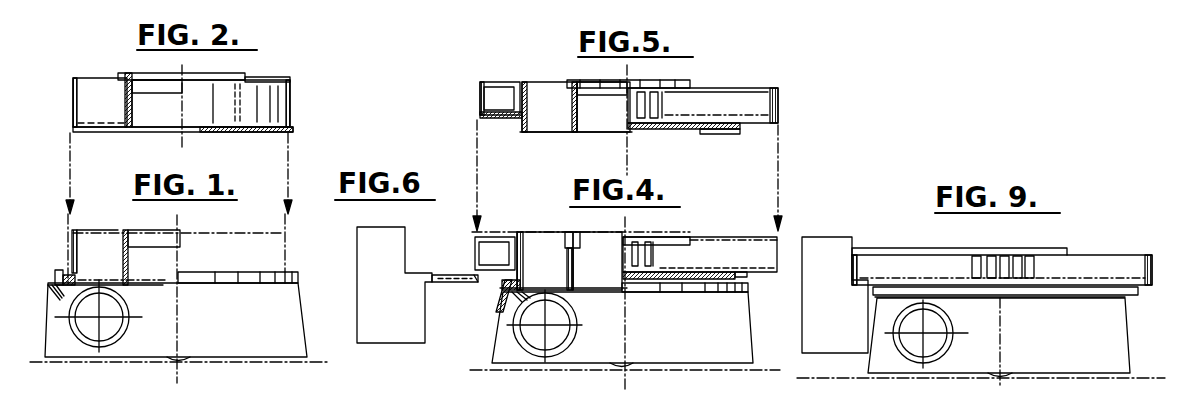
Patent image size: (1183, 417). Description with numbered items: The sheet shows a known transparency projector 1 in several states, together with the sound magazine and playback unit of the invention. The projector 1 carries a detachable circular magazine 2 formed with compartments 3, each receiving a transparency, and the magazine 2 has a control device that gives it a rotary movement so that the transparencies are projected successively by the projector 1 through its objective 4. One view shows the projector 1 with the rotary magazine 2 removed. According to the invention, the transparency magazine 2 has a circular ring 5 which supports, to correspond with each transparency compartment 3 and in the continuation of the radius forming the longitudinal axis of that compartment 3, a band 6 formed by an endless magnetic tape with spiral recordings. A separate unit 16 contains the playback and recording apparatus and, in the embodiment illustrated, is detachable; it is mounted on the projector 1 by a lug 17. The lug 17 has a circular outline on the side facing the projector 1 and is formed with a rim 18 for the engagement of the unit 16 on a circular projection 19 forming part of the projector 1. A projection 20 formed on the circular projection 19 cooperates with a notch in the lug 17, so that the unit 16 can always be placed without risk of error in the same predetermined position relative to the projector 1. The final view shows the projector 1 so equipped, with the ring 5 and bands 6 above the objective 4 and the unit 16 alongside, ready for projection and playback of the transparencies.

In FIG. 1, the transparency projector 1 is at (297, 318).
In FIG. 4, the transparency projector 1 is at (720, 350).
In FIG. 9, the transparency projector 1 is at (1092, 362).
In FIG. 2, the circular magazine 2 is at (204, 97).
In FIG. 2, the compartments 3 is at (101, 88).
In FIG. 5, the compartments 3 is at (553, 95).
In FIG. 4, the compartments 3 is at (545, 261).
In FIG. 1, the objective 4 is at (93, 335).
In FIG. 4, the objective 4 is at (535, 340).
In FIG. 9, the objective 4 is at (933, 347).
In FIG. 5, the circular ring 5 is at (508, 120).
In FIG. 9, the circular ring 5 is at (1138, 295).
In FIG. 5, the band 6 is at (484, 97).
In FIG. 4, the band 6 is at (626, 258).
In FIG. 9, the band 6 is at (866, 262).
In FIG. 6, the unit 16 is at (392, 355).
In FIG. 9, the unit 16 is at (827, 365).
In FIG. 6, the lug 17 is at (436, 273).
In FIG. 6, the rim 18 is at (478, 283).
In FIG. 1, the circular projection 19 is at (58, 270).
In FIG. 4, the circular projection 19 is at (500, 300).
In FIG. 1, the projection 20 is at (73, 262).
In FIG. 4, the projection 20 is at (520, 280).